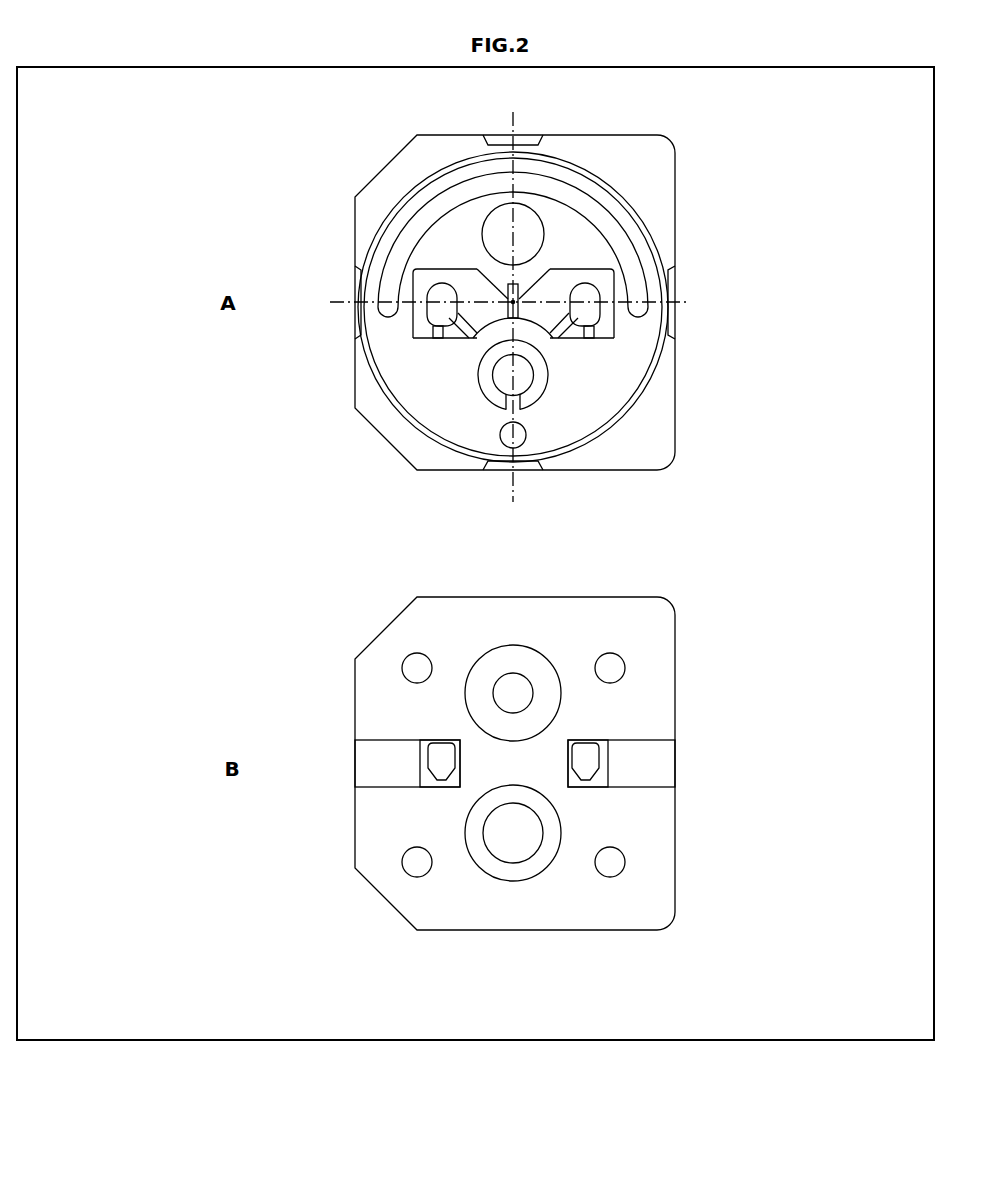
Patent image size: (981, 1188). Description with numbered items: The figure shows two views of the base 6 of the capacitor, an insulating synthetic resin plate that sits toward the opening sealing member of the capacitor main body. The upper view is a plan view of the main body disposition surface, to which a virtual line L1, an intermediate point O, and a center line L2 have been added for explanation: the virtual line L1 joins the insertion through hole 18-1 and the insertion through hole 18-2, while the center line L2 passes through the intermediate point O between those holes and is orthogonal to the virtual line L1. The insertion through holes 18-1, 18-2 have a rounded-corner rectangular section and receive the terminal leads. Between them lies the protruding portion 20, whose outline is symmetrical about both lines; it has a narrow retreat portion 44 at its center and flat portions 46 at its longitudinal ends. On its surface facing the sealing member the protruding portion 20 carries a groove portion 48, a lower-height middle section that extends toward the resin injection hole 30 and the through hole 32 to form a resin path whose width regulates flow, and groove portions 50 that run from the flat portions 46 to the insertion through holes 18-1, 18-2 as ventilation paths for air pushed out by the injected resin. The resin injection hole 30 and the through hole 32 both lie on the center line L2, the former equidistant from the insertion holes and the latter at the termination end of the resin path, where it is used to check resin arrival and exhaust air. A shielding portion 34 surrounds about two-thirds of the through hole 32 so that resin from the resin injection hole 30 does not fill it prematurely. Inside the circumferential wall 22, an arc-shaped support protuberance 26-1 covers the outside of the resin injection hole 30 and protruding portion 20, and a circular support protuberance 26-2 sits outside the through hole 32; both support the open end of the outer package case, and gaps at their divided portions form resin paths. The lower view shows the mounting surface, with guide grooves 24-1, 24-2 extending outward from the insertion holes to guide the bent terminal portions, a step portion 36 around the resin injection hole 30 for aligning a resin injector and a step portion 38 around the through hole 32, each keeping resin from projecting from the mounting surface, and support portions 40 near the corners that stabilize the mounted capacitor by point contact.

The base 6 is at (687, 441).
The insertion through hole 18-1 is at (428, 330).
The insertion through hole 18-2 is at (603, 343).
The protruding portion 20 is at (613, 318).
The circumferential wall 22 is at (615, 152).
The guide groove 24-1 is at (368, 767).
The guide groove 24-2 is at (660, 762).
The support protuberance 26-1 is at (417, 218).
The support protuberance 26-2 is at (517, 448).
The resin injection hole 30 is at (490, 213).
The through hole 32 is at (531, 398).
The shielding portion 34 is at (480, 396).
The step portion 36 is at (530, 873).
The step portion 38 is at (543, 668).
The support portion 40 is at (618, 665).
The retreat portion 44 is at (527, 288).
The flat portion 46 is at (593, 270).
The groove portion 48 is at (505, 323).
The groove portion 50 is at (584, 340).
The intermediate point O is at (512, 301).
The virtual line L1 is at (681, 302).
The center line L2 is at (513, 115).